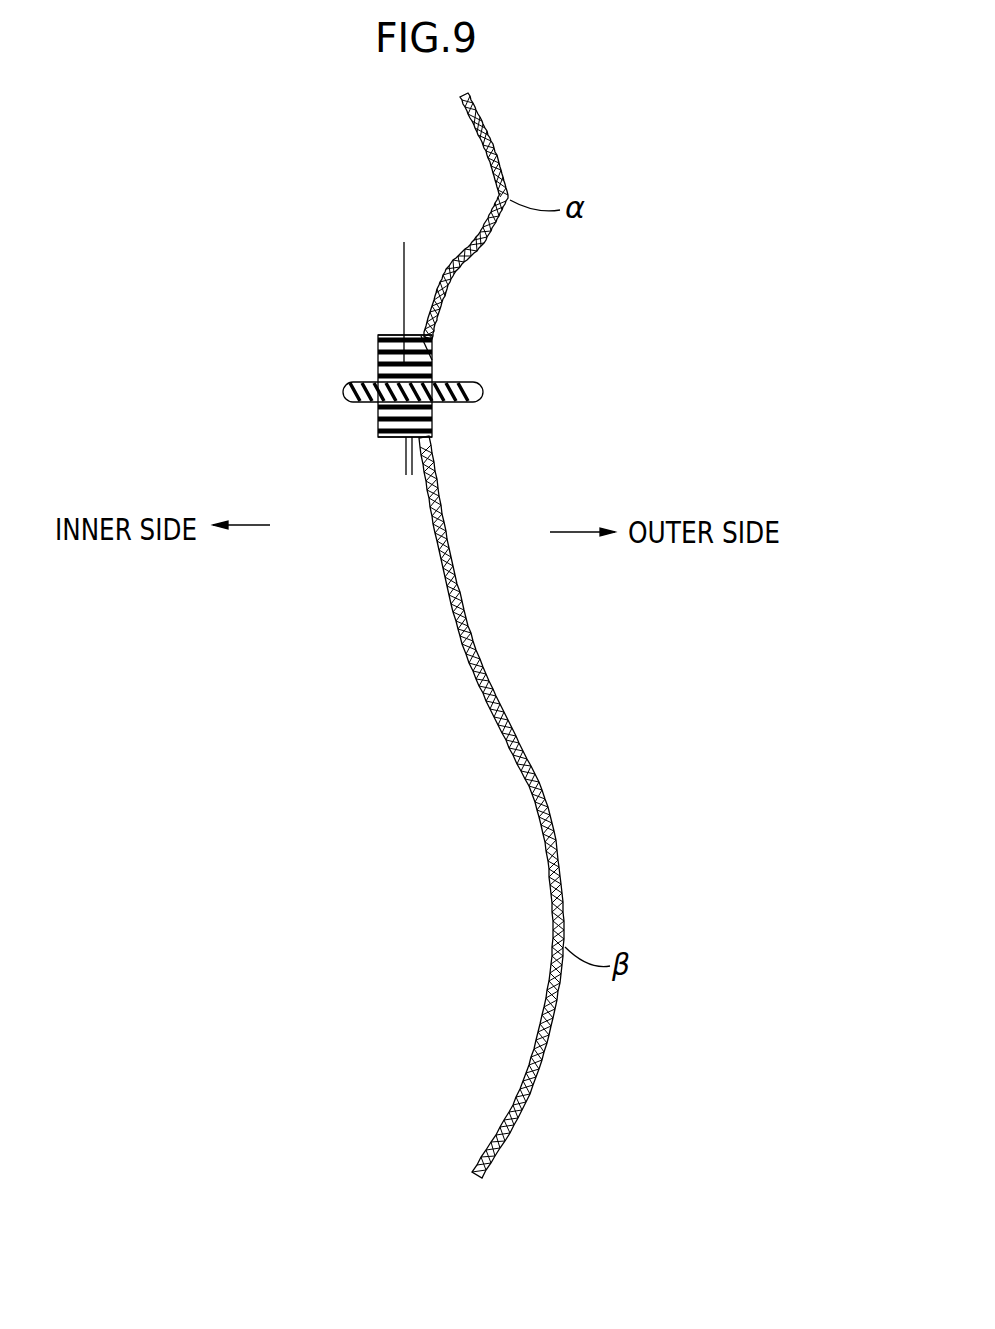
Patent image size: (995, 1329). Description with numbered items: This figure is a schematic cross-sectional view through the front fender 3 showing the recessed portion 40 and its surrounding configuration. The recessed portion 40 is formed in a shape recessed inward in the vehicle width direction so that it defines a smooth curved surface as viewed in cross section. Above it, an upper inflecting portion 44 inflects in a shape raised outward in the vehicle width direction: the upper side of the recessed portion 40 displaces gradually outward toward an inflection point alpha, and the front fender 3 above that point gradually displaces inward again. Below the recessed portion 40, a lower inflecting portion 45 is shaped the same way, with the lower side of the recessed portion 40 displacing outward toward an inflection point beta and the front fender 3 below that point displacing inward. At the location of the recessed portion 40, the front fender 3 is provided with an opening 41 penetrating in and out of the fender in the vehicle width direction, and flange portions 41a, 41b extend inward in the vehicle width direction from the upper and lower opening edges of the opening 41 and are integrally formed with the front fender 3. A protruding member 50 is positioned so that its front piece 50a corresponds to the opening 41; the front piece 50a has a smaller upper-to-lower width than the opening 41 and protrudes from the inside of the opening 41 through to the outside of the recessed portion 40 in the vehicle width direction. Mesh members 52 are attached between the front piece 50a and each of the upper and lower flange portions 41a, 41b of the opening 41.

The front fender 3 is at (514, 214).
The upper inflecting portion 44 is at (518, 172).
The recessed portion 40 is at (538, 805).
The lower inflecting portion 45 is at (568, 915).
The opening 41 is at (437, 371).
The upper flange portion 41a is at (385, 336).
The lower flange portion 41b is at (393, 440).
The protruding member 50 is at (441, 357).
The front piece 50a is at (466, 381).
The mesh member 52 is at (397, 536).